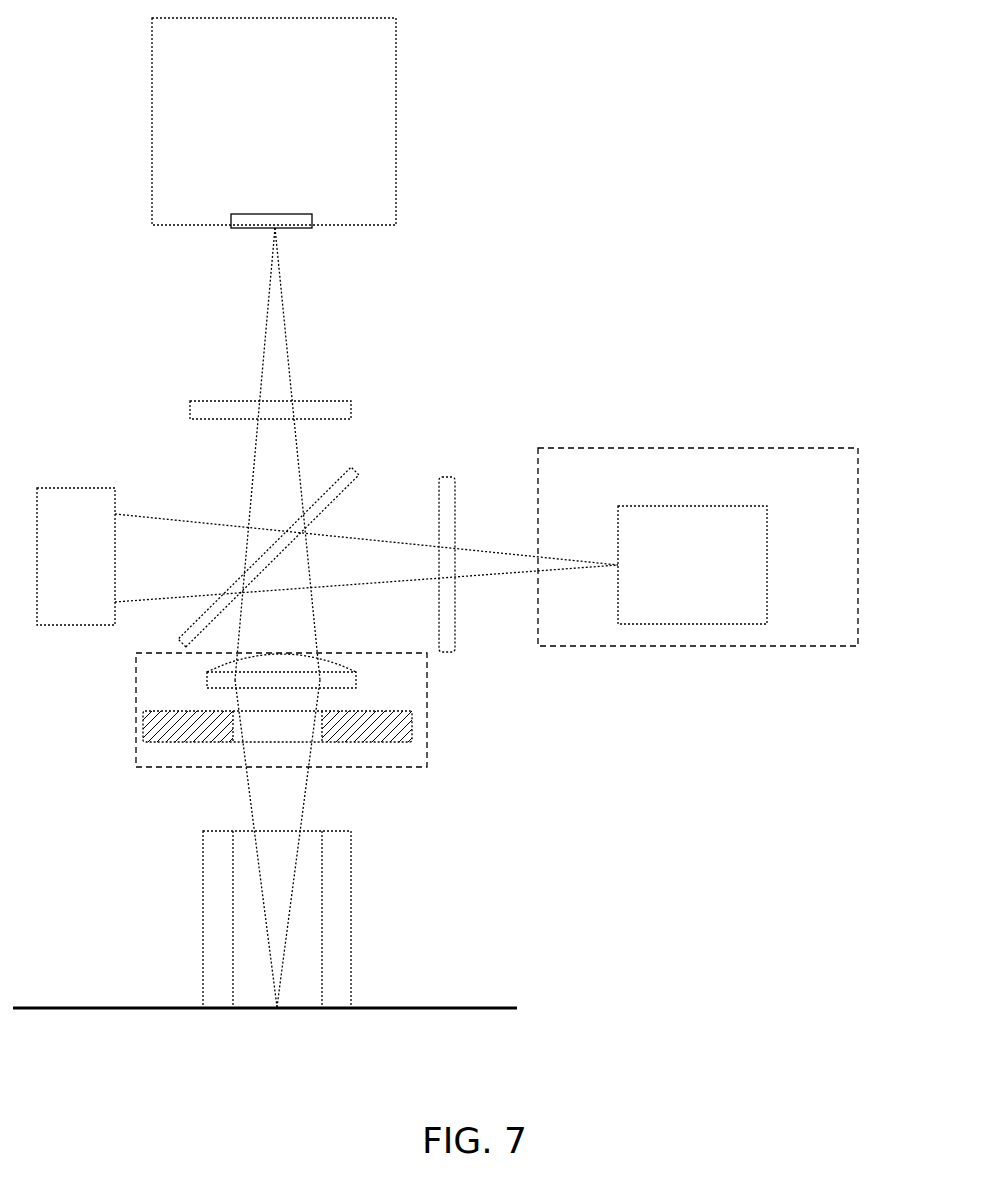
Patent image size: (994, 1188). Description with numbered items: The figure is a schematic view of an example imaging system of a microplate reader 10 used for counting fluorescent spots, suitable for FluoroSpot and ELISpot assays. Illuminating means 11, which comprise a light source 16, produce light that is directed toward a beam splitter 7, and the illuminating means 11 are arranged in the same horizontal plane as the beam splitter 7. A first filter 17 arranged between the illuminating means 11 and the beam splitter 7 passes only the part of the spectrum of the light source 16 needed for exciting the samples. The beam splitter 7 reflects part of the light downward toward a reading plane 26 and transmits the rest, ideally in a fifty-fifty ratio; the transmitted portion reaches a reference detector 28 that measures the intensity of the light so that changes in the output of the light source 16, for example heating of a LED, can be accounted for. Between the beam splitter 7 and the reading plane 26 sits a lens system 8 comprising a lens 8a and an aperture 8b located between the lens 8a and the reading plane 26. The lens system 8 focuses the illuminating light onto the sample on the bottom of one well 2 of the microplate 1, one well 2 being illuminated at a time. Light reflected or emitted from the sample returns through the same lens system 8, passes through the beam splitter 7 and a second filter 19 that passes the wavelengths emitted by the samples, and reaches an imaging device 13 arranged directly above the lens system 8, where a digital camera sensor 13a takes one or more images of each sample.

The microplate 1 is at (392, 916).
The well 2 is at (233, 831).
The beam splitter 7 is at (352, 473).
The lens system 8 is at (136, 753).
The lens 8a is at (207, 680).
The aperture 8b is at (312, 742).
The microplate reader 10 is at (656, 849).
The illuminating means 11 is at (798, 448).
The imaging device 13 is at (396, 162).
The digital camera sensor 13a is at (250, 213).
The light source 16 is at (742, 506).
The first filter 17 is at (447, 476).
The second filter 19 is at (190, 411).
The reading plane 26 is at (492, 1007).
The reference detector 28 is at (53, 488).